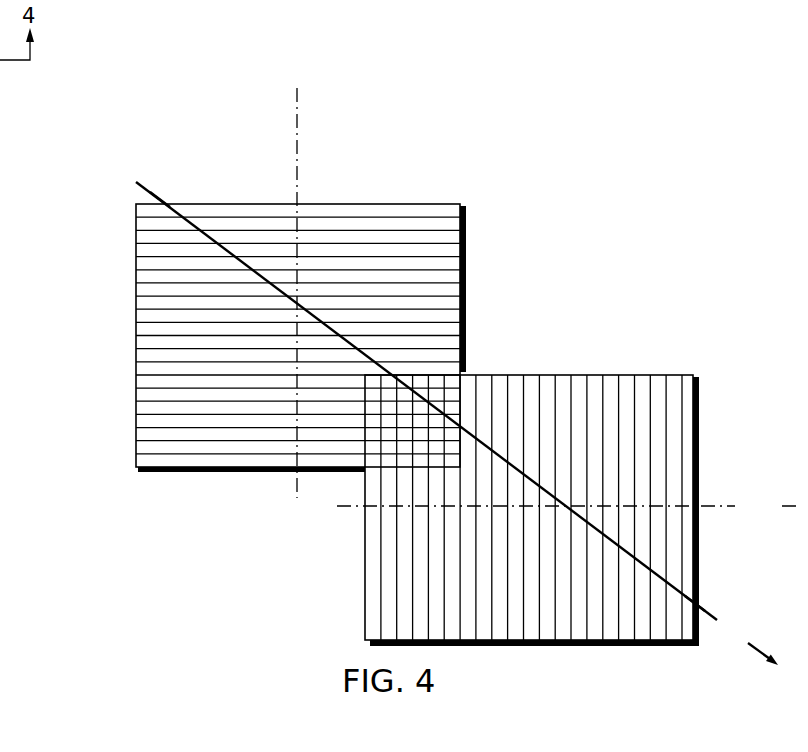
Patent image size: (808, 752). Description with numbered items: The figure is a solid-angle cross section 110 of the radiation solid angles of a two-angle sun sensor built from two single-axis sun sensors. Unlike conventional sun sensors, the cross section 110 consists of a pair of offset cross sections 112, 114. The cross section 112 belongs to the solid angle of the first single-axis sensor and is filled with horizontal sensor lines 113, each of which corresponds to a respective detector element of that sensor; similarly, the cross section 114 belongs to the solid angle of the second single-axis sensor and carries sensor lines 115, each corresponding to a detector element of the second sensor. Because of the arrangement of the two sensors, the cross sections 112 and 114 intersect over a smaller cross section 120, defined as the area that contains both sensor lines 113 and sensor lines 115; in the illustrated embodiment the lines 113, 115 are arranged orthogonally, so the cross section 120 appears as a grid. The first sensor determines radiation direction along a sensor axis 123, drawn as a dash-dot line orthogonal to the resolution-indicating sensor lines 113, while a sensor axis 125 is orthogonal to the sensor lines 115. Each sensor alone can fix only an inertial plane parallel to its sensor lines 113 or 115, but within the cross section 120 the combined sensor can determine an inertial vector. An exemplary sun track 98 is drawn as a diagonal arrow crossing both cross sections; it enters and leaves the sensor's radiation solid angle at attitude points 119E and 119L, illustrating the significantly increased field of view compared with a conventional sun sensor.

The cross section 110 is at (359, 340).
The cross section 112 is at (243, 338).
The sensor lines 113 is at (155, 285).
The cross section 114 is at (478, 510).
The sensor lines 115 is at (395, 598).
The attitude point 119E is at (167, 203).
The attitude point 119L is at (698, 602).
The cross section 120 is at (462, 406).
The sensor axis 123 is at (298, 293).
The sensor axis 125 is at (566, 510).
The sun track 98 is at (457, 423).